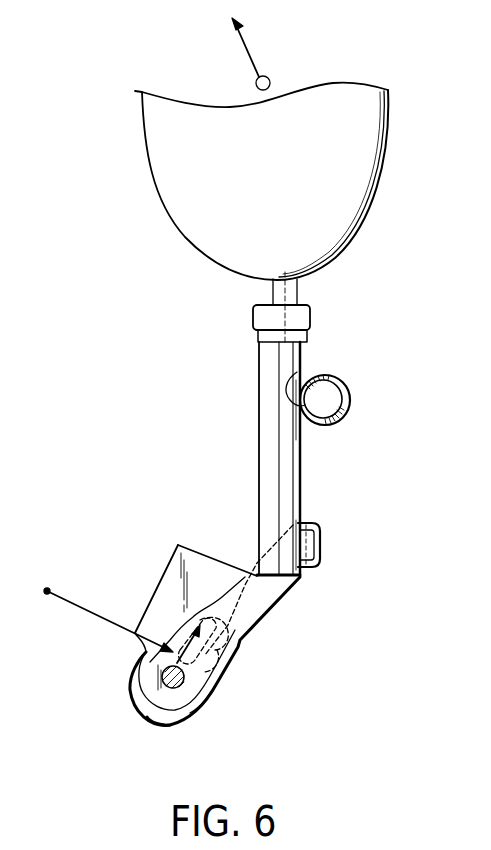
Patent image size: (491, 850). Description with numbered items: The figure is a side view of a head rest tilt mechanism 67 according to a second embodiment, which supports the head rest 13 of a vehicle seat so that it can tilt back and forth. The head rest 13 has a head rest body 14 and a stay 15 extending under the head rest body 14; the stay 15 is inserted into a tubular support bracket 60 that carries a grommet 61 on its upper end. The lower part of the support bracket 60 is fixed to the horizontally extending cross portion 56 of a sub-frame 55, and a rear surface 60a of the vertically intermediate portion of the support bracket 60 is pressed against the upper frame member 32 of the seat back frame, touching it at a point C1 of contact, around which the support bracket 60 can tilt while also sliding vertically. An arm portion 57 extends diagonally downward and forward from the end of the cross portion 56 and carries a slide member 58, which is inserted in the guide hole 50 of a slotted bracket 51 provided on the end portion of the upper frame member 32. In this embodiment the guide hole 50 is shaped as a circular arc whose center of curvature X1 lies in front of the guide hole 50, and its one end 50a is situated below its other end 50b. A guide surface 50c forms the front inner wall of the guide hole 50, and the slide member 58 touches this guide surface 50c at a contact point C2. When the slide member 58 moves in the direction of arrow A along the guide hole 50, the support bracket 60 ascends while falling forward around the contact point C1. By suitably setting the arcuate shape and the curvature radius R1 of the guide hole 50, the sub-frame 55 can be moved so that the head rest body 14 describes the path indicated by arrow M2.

The head rest 13 is at (418, 98).
The head rest body 14 is at (367, 185).
The stay 15 is at (297, 295).
The path of head rest body M2 is at (245, 43).
The grommet 61 is at (253, 315).
The support bracket 60 is at (259, 440).
The rear surface of support bracket 60a is at (302, 422).
The upper frame member 32 is at (350, 395).
The point of contact C1 is at (297, 372).
The head rest tilt mechanism 67 is at (87, 430).
The sub-frame 55 is at (320, 548).
The cross portion 56 is at (310, 570).
The arm portion 57 is at (263, 605).
The slotted bracket 51 is at (175, 572).
The guide hole 50 is at (227, 675).
The one end of guide hole 50a is at (147, 710).
The other end of guide hole 50b is at (237, 648).
The guide surface 50c is at (180, 628).
The slide member 58 is at (200, 707).
The contact point C2 is at (162, 677).
The direction of slide member movement A is at (200, 675).
The center of curvature of guide hole X1 is at (93, 614).
The curvature radius of guide hole R1 is at (87, 611).